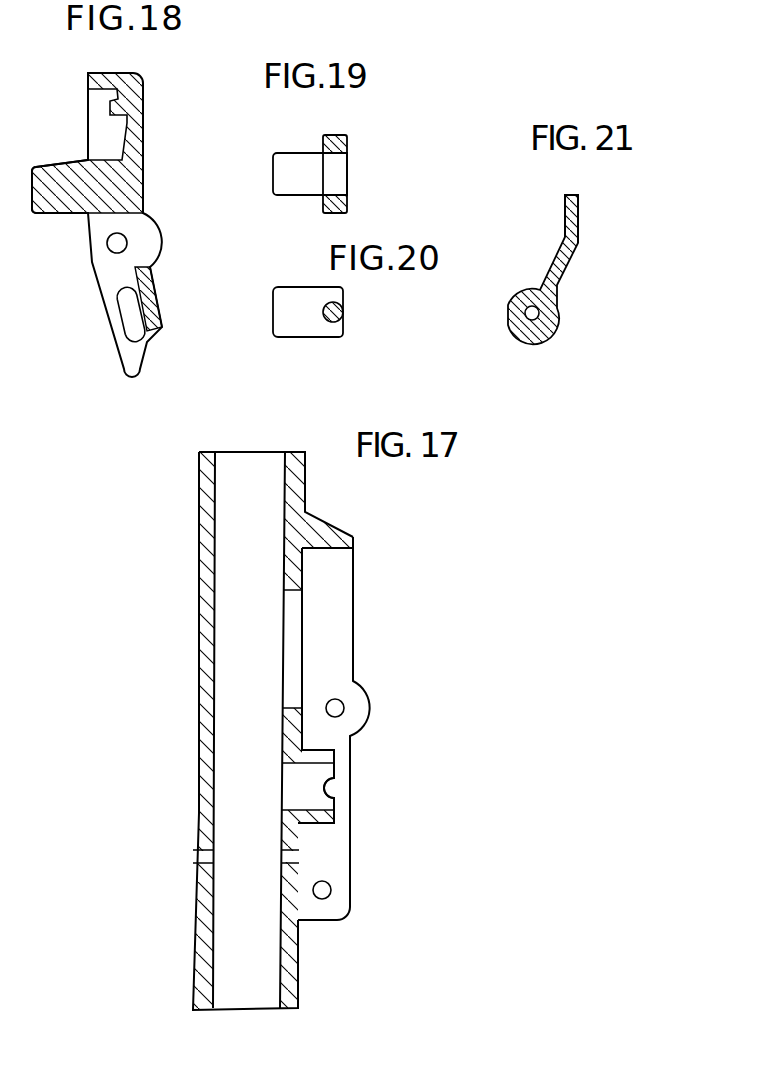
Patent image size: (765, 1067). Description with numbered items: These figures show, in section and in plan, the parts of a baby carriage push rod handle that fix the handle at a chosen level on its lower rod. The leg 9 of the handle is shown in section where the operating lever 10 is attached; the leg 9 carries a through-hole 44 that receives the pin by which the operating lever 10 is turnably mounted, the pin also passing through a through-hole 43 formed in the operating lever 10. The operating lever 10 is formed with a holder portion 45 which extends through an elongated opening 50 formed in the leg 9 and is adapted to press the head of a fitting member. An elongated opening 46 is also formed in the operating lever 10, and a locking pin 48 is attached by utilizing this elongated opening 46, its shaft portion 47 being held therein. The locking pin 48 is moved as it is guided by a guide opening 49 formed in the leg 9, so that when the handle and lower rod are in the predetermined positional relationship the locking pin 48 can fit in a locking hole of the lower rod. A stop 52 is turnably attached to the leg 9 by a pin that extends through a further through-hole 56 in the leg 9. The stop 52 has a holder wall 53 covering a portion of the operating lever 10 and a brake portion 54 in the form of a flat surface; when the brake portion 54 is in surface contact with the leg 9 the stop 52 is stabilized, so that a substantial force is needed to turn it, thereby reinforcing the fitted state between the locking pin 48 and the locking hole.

In FIG. 17, the leg 9 is at (180, 610).
In FIG. 18, the operating lever 10 is at (114, 225).
In FIG. 18, the through-hole 43 is at (122, 246).
In FIG. 17, the through-hole 44 is at (344, 707).
In FIG. 18, the holder portion 45 is at (35, 196).
In FIG. 18, the elongated opening 46 is at (128, 327).
In FIG. 19, the shaft portion 47 is at (343, 139).
In FIG. 20, the shaft portion 47 is at (343, 311).
In FIG. 19, the locking pin 48 is at (281, 187).
In FIG. 20, the locking pin 48 is at (279, 331).
In FIG. 17, the guide opening 49 is at (337, 797).
In FIG. 17, the elongated opening 50 is at (297, 618).
In FIG. 21, the stop 52 is at (558, 288).
In FIG. 21, the holder wall 53 is at (577, 213).
In FIG. 21, the brake portion 54 is at (506, 313).
In FIG. 17, the through-hole 56 is at (331, 889).